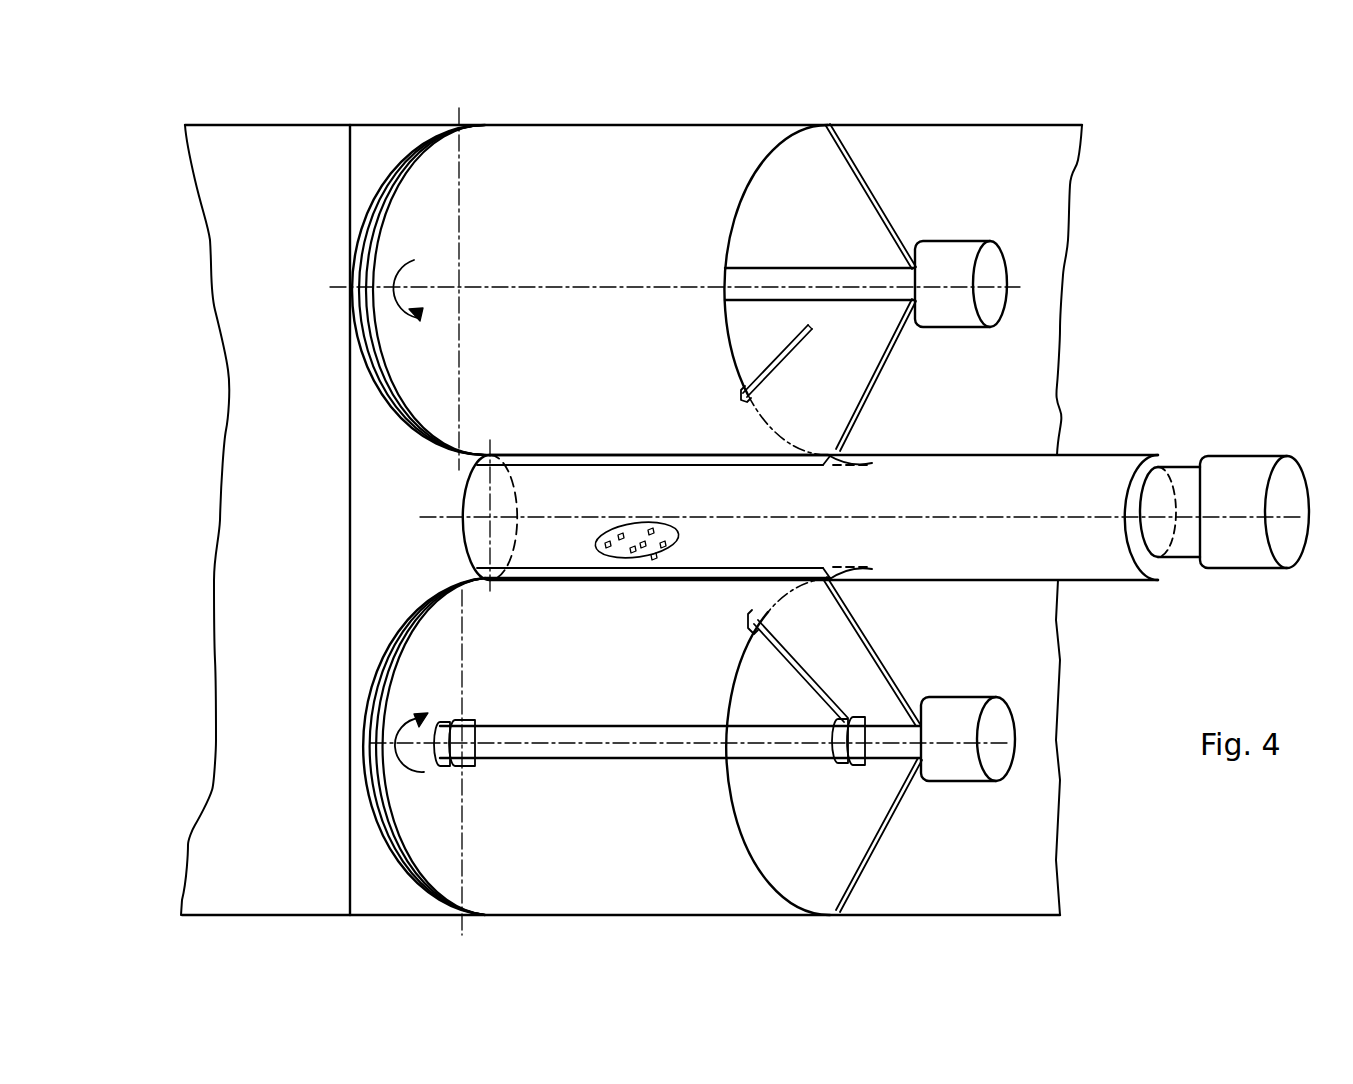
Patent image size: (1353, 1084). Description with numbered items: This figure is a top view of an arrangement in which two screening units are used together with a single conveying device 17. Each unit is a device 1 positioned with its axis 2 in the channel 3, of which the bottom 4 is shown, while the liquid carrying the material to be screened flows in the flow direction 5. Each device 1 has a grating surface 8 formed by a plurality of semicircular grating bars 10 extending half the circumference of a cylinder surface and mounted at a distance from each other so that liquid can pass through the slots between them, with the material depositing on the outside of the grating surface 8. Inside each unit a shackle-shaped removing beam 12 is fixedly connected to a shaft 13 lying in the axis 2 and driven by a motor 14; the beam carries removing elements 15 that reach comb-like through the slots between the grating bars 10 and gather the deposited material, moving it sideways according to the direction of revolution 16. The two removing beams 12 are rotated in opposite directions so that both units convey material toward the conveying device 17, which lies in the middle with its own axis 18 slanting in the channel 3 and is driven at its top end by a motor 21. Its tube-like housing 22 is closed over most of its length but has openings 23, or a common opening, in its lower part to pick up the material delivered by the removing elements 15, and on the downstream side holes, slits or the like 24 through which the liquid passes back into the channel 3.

The device 1 is at (702, 514).
The axis 2 is at (491, 287).
The channel 3 is at (237, 188).
The bottom 4 is at (631, 493).
The flow direction 5 is at (224, 496).
The grating surface 8 is at (525, 183).
The grating bars 10 is at (410, 163).
The removing beam 12 is at (787, 352).
The shaft 13 is at (843, 277).
The motor 14 is at (960, 255).
The removing elements 15 is at (750, 399).
The direction of revolution 16 is at (376, 514).
The conveying device 17 is at (700, 435).
The axis 18 is at (1075, 512).
The motor 21 is at (1237, 475).
The housing 22 is at (1058, 548).
The opening 23 is at (549, 578).
The holes, slits or the like 24 is at (646, 557).